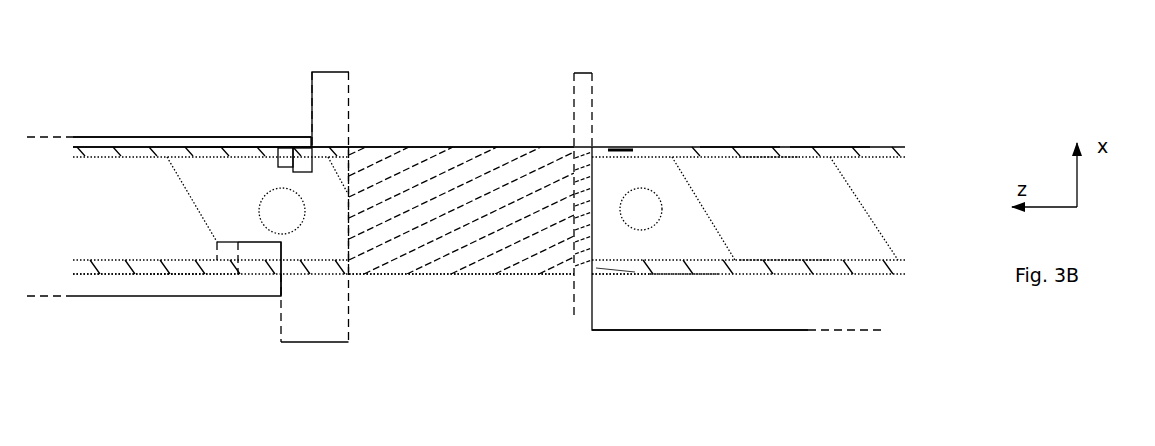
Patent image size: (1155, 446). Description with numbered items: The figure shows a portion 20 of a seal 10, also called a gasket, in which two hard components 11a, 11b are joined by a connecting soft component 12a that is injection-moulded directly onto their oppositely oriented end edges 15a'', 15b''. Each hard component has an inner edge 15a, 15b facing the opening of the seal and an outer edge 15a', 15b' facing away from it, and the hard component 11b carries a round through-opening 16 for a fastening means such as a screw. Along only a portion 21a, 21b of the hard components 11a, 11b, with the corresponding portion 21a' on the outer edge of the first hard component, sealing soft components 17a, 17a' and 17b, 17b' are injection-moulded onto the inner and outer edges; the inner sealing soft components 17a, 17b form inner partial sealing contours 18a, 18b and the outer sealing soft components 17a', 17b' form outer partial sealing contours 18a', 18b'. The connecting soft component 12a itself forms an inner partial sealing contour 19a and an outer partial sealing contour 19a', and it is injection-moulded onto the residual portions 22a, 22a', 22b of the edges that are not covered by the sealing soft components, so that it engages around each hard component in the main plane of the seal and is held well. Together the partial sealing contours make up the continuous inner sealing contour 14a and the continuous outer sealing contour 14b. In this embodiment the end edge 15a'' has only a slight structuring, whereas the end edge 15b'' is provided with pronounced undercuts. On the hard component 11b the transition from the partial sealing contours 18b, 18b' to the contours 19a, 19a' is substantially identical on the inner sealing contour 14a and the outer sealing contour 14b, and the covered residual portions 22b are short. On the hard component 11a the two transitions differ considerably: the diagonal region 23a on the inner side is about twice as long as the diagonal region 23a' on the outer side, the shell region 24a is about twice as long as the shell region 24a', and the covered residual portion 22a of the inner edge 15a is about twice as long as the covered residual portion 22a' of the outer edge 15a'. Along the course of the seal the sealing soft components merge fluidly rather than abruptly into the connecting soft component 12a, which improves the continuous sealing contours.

The seal 10 is at (489, 74).
The portion of the gasket 20 is at (470, 78).
The hard component 11a is at (146, 236).
The hard component 11b is at (868, 180).
The connecting soft component 12a is at (440, 180).
The inner continuous sealing contour 14a is at (615, 282).
The outer continuous sealing contour 14b is at (737, 143).
The inner edge 15a is at (136, 325).
The outer edge 15a' is at (192, 99).
The end edge 15a'' is at (383, 228).
The inner edge 15b is at (785, 317).
The outer edge 15b' is at (773, 100).
The end edge 15b'' is at (549, 234).
The through-opening 16 is at (290, 203).
The inner sealing soft component 17a is at (198, 293).
The outer sealing soft component 17a' is at (211, 120).
The inner sealing soft component 17b is at (748, 289).
The outer sealing soft component 17b' is at (748, 120).
The inner partial sealing contour 18a is at (195, 331).
The outer partial sealing contour 18a' is at (255, 111).
The inner partial sealing contour 18b is at (685, 327).
The outer partial sealing contour 18b' is at (830, 82).
The inner partial sealing contour 19a is at (461, 315).
The outer partial sealing contour 19a' is at (461, 102).
The portion 21a is at (177, 288).
The upper flange section of first component 21a' is at (192, 121).
The portion 21b is at (730, 330).
The covered residual portion 22a is at (315, 322).
The covered residual portion 22a' is at (333, 190).
The covered residual portion 22b is at (583, 73).
The diagonal region 23a is at (259, 257).
The diagonal region 23a' is at (316, 177).
The shell region 24a is at (228, 246).
The shell region 24a' is at (276, 172).